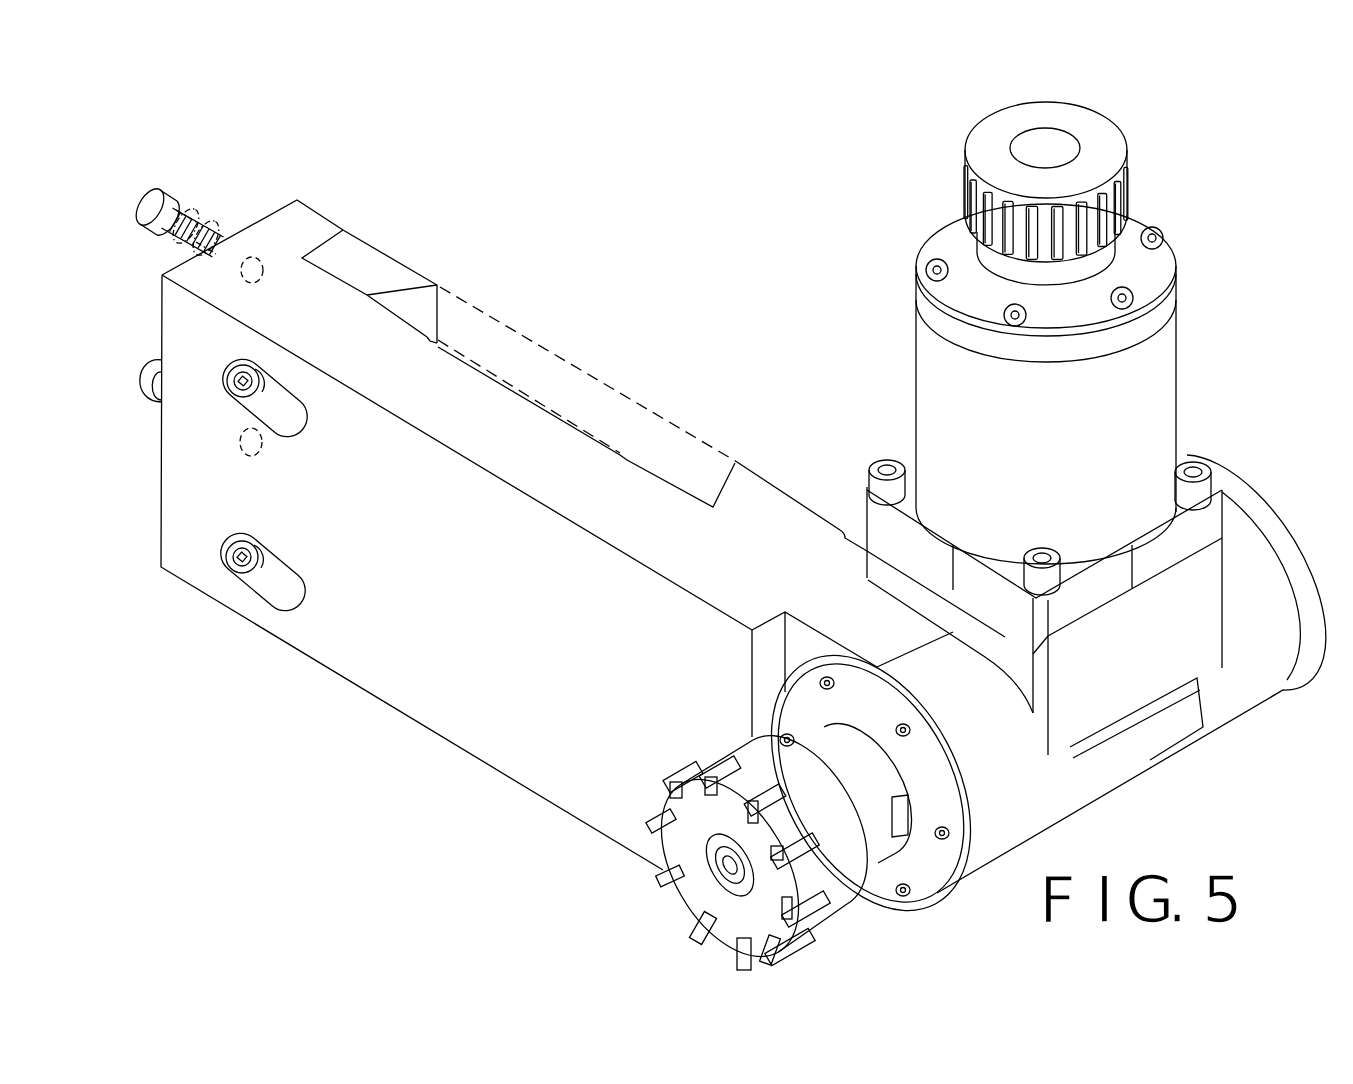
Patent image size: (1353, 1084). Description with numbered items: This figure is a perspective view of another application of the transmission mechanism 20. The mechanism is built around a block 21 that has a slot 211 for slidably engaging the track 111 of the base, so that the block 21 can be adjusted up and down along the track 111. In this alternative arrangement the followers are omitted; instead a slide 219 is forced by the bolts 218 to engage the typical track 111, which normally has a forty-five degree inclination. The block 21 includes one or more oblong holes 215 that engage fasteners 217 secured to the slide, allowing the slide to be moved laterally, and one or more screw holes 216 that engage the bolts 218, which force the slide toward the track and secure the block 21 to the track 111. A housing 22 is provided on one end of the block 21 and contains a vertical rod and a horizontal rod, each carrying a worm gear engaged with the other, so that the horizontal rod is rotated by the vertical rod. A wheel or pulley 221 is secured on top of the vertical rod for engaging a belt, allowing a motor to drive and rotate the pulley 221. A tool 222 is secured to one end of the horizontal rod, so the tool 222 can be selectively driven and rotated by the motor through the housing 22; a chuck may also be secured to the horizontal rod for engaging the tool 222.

The transmission mechanism 20 is at (1102, 320).
The block 21 is at (508, 541).
The housing 22 is at (1207, 663).
The track 111 is at (480, 323).
The slot 211 is at (508, 387).
The oblong holes 215 is at (283, 598).
The screw holes 216 is at (255, 257).
The fasteners 217 is at (250, 583).
The bolts 218 is at (155, 195).
The slide 219 is at (372, 254).
The pulley 221 is at (1100, 128).
The tool 222 is at (875, 847).